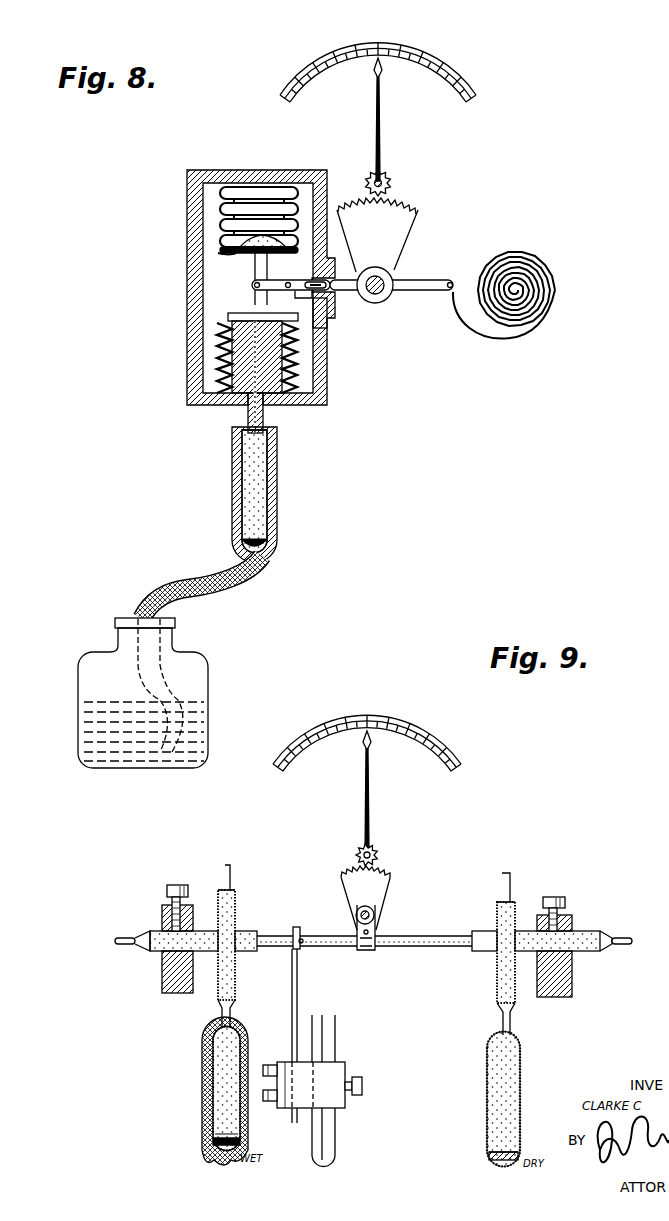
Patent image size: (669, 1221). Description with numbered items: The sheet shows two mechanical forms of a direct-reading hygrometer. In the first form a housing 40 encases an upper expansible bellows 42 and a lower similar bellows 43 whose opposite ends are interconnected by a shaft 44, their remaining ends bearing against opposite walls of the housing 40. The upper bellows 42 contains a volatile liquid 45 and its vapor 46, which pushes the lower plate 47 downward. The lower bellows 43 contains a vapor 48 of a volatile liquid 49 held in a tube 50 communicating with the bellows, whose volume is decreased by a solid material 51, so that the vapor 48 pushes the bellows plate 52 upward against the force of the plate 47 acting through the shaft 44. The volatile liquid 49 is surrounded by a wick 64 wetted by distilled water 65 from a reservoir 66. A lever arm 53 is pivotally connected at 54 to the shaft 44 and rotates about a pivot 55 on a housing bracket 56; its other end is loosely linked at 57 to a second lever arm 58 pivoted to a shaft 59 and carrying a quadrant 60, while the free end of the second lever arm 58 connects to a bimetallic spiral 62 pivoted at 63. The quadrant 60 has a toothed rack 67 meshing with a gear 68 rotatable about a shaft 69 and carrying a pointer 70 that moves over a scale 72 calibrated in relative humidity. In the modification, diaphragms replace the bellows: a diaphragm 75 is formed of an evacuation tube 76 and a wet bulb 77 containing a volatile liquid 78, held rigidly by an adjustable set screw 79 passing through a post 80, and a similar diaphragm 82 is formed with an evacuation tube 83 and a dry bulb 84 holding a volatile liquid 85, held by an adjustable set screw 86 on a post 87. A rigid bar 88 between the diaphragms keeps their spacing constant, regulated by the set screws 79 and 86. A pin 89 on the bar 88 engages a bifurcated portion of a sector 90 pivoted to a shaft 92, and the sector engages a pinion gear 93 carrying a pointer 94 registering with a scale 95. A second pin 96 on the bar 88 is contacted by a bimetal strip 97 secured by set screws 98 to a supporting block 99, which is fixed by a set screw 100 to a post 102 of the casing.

In FIG. 8, the housing 40 is at (190, 350).
In FIG. 8, the upper expansible bellows 42 is at (226, 200).
In FIG. 8, the lower bellows 43 is at (298, 370).
In FIG. 8, the shaft 44 is at (254, 277).
In FIG. 8, the volatile liquid 45 is at (224, 249).
In FIG. 8, the vapor 46 is at (262, 240).
In FIG. 8, the lower plate 47 is at (224, 253).
In FIG. 8, the vapor 48 is at (290, 390).
In FIG. 8, the volatile liquid 49 is at (262, 540).
In FIG. 8, the tube 50 is at (262, 468).
In FIG. 8, the solid material 51 is at (225, 400).
In FIG. 8, the bellows plate 52 is at (234, 312).
In FIG. 8, the lever arm 53 is at (316, 326).
In FIG. 8, the pivotal connection 54 is at (250, 285).
In FIG. 8, the pivot 55 is at (290, 283).
In FIG. 8, the housing bracket 56 is at (312, 300).
In FIG. 8, the loose link 57 is at (338, 280).
In FIG. 8, the second lever arm 58 is at (440, 280).
In FIG. 8, the shaft 59 is at (385, 292).
In FIG. 8, the quadrant 60 is at (404, 230).
In FIG. 8, the bimetallic spiral 62 is at (506, 340).
In FIG. 8, the pivot 63 is at (540, 278).
In FIG. 8, the wick 64 is at (220, 582).
In FIG. 9, the wick 64 is at (204, 1056).
In FIG. 8, the distilled water 65 is at (96, 690).
In FIG. 8, the reservoir 66 is at (76, 758).
In FIG. 8, the toothed rack 67 is at (406, 196).
In FIG. 8, the gear 68 is at (397, 176).
In FIG. 8, the shaft 69 is at (373, 181).
In FIG. 8, the pointer 70 is at (380, 108).
In FIG. 8, the scale 72 is at (452, 70).
In FIG. 9, the diaphragm 75 is at (244, 877).
In FIG. 9, the evacuation tube 76 is at (124, 945).
In FIG. 9, the wet bulb 77 is at (212, 1078).
In FIG. 9, the volatile liquid 78 is at (215, 1140).
In FIG. 9, the adjustable set screw 79 is at (178, 884).
In FIG. 9, the post 80 is at (162, 985).
In FIG. 9, the diaphragm 82 is at (527, 880).
In FIG. 9, the evacuation tube 83 is at (620, 946).
In FIG. 9, the dry bulb 84 is at (518, 1066).
In FIG. 9, the volatile liquid 85 is at (508, 1152).
In FIG. 9, the adjustable set screw 86 is at (565, 900).
In FIG. 9, the post 87 is at (572, 990).
In FIG. 9, the rigid bar 88 is at (424, 950).
In FIG. 9, the pin 89 is at (366, 950).
In FIG. 9, the sector 90 is at (385, 886).
In FIG. 9, the shaft 92 is at (356, 913).
In FIG. 9, the pinion gear 93 is at (378, 856).
In FIG. 9, the pointer 94 is at (369, 794).
In FIG. 9, the scale 95 is at (436, 740).
In FIG. 9, the second pin 96 is at (300, 950).
In FIG. 9, the strip 97 is at (297, 985).
In FIG. 9, the set screws 98 is at (262, 1095).
In FIG. 9, the supporting block 99 is at (345, 1104).
In FIG. 9, the set screw 100 is at (364, 1086).
In FIG. 9, the post 102 is at (333, 1042).